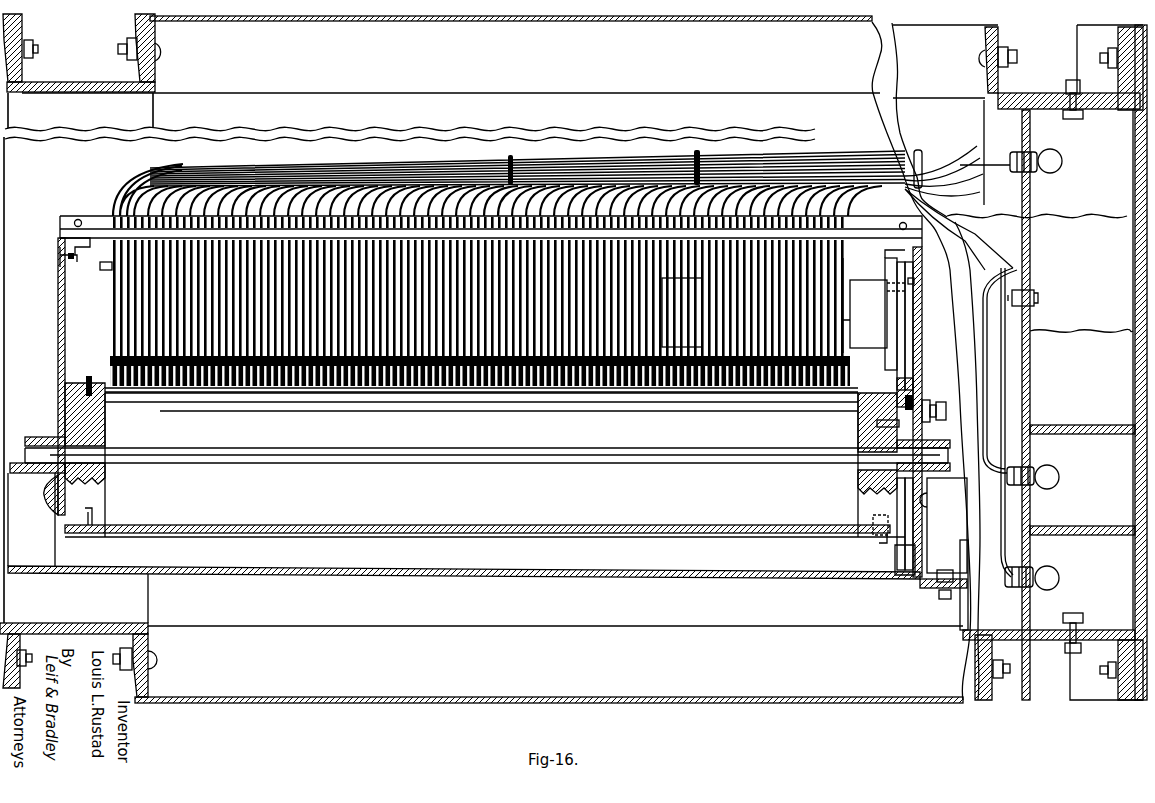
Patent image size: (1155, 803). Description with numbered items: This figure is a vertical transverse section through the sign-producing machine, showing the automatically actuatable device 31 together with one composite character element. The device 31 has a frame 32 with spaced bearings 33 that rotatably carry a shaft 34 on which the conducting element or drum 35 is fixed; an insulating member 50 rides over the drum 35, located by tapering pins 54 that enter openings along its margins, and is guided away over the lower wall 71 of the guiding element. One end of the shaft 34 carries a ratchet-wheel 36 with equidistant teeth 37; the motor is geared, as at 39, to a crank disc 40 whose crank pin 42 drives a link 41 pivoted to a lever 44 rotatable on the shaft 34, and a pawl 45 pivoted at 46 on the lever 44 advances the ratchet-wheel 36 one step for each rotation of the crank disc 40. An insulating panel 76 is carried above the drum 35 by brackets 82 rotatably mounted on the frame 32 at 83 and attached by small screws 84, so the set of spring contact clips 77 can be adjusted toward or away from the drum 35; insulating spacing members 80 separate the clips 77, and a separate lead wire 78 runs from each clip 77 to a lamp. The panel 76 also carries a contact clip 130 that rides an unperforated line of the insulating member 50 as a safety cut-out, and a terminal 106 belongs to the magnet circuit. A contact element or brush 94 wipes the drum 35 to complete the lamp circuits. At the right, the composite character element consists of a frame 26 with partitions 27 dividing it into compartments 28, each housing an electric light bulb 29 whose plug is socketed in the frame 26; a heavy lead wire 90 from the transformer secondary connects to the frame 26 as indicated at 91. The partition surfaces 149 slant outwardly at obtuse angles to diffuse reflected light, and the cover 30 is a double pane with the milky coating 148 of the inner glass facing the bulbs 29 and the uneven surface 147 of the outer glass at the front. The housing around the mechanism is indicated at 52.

The housing 52 is at (372, 20).
The automatically actuatable device 31 is at (470, 149).
The lead wire 78 is at (312, 178).
The electric light bulb 29 is at (1063, 162).
The small screws 84 is at (74, 217).
The panel 76 is at (862, 227).
The axis of bracket 83 is at (55, 262).
The bracket 82 is at (58, 272).
The terminal 106 is at (112, 268).
The spring contact clip 77 is at (146, 302).
The insulating contact clip spacing member 80 is at (113, 348).
The tapering pins 54 is at (88, 377).
The bearing 33 is at (40, 436).
The shaft 34 is at (157, 449).
The conducting element or drum 35 is at (149, 525).
The frame 32 is at (40, 545).
The lower wall of guiding element 71 is at (208, 540).
The insulating member 50 is at (396, 540).
The contact clip 130 is at (843, 281).
The crank disc 40 is at (885, 265).
The gearing 39 is at (845, 322).
The crank pin 42 is at (915, 301).
The link 41 is at (906, 313).
The teeth 37 is at (903, 380).
The ratchet-wheel 36 is at (905, 391).
The contact element or brush 94 is at (912, 402).
The pawl pivot 46 is at (870, 516).
The pawl 45 is at (908, 532).
The lever 44 is at (904, 546).
The lead wire 90 is at (1015, 251).
The uneven surface 147 is at (1133, 244).
The cloudy or milky-like coating 148 is at (1133, 281).
The connection of lead wire to frame 91 is at (1036, 297).
The cover 30 is at (1133, 346).
The partitions 27 is at (1090, 424).
The slanting surfaces of partitions 149 is at (1100, 110).
The frame 26 is at (1030, 515).
The compartments or sections 28 is at (1045, 605).